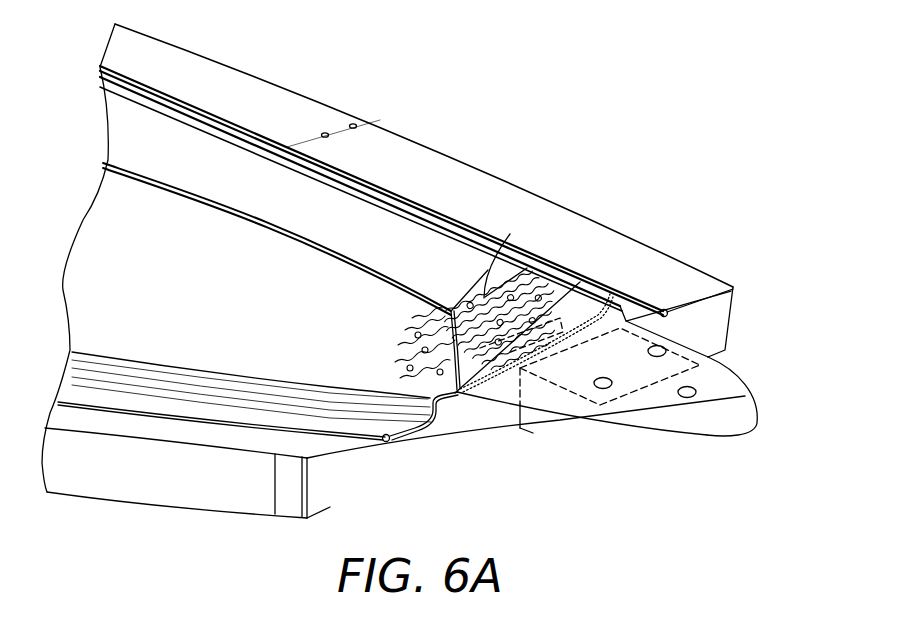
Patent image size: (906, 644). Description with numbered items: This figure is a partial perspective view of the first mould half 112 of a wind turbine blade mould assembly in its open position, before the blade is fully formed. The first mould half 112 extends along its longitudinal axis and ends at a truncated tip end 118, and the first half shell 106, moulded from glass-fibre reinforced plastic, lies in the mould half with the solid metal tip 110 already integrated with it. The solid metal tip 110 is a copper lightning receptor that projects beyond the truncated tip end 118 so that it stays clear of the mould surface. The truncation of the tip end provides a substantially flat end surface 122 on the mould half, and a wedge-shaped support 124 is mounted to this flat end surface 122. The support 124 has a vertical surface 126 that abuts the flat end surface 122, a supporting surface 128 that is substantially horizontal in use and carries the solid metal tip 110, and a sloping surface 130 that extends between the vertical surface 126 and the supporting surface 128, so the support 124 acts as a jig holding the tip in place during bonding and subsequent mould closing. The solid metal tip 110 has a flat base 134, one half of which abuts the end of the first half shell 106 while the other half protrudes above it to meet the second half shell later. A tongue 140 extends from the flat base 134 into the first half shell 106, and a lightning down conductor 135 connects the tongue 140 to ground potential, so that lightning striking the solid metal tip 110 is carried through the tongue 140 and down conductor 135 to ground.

The first half shell 106 is at (186, 252).
The solid metal tip 110 is at (730, 393).
The first mould half 112 is at (271, 56).
The truncated tip end 118 is at (431, 281).
The flat end surface 122 is at (368, 485).
The support 124 is at (535, 423).
The vertical surface 126 is at (515, 417).
The supporting surface 128 is at (636, 377).
The sloping surface 130 is at (558, 423).
The flat base 134 is at (585, 300).
The lightning down conductor 135 is at (297, 235).
The tongue 140 is at (510, 234).